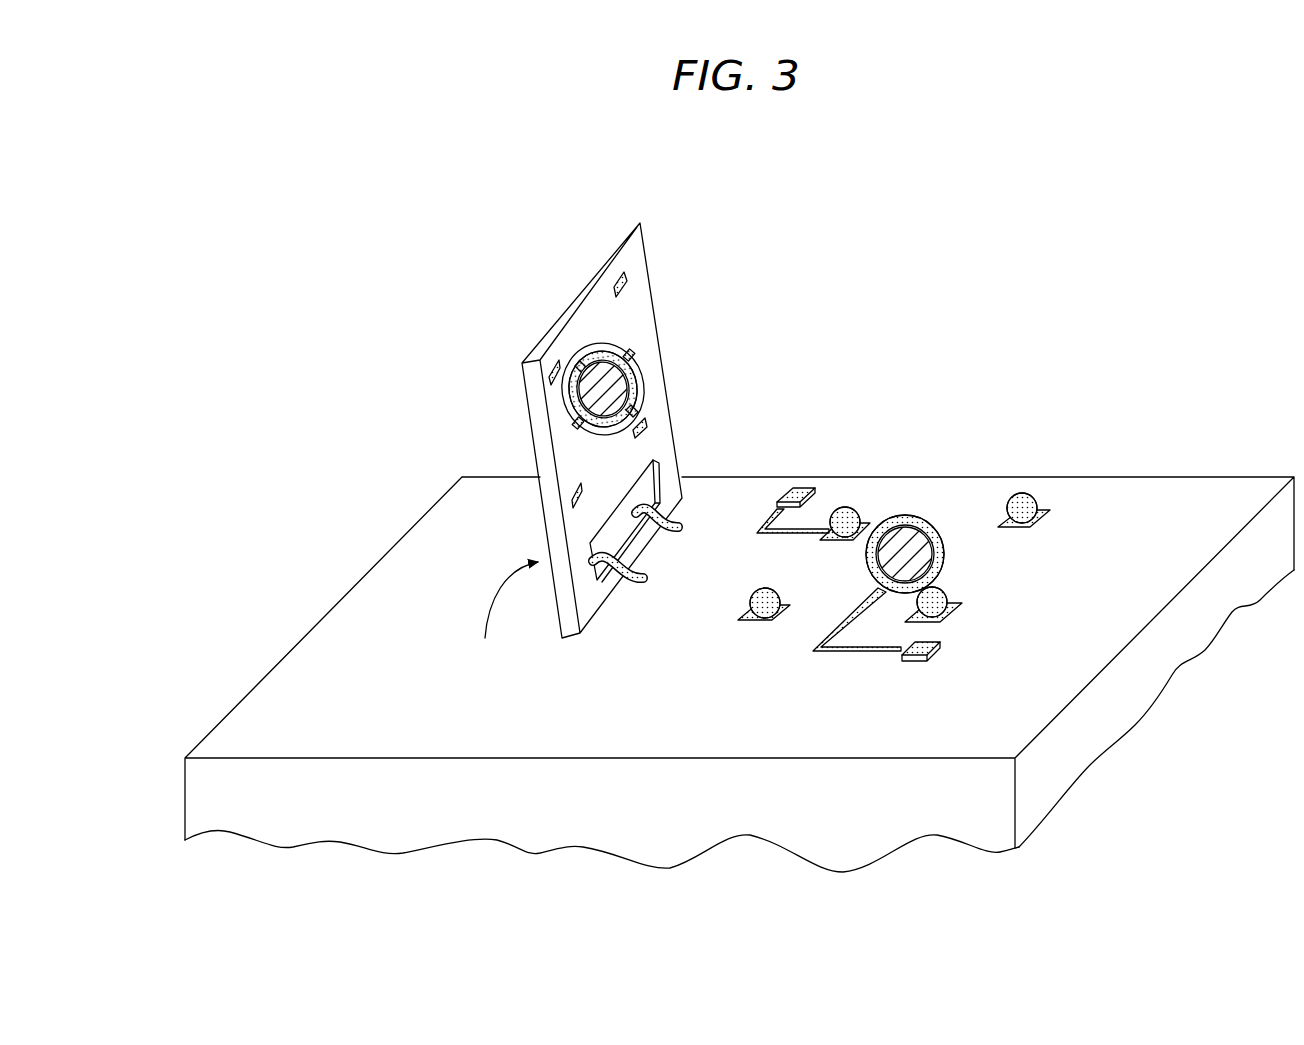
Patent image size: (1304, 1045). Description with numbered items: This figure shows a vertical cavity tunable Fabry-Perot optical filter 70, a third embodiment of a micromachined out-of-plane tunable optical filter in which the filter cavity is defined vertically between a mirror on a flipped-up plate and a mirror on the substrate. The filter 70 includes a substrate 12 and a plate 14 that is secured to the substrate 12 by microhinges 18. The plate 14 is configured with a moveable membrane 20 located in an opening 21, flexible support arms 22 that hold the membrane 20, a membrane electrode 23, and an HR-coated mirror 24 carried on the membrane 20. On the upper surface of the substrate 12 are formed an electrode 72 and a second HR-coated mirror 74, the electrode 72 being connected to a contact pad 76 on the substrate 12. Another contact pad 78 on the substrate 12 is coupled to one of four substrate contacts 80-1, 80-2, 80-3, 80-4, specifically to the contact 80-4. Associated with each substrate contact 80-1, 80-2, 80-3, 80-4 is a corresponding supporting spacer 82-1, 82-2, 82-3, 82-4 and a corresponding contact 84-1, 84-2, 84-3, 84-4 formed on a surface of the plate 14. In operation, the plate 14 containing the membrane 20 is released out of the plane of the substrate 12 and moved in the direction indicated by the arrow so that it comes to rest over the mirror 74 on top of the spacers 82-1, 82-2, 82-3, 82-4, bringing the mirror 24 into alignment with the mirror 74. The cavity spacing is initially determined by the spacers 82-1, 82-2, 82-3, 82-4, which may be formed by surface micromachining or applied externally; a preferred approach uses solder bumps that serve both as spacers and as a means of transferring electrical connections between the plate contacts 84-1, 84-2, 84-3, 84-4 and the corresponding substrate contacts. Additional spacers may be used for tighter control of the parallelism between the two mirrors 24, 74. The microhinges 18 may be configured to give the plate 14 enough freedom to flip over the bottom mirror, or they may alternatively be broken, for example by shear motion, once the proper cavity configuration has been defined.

The substrate 12 is at (892, 810).
The plate 14 is at (637, 297).
The microhinges 18 is at (679, 532).
The membrane 20 is at (594, 320).
The opening 21 is at (642, 378).
The flexible support arms 22 is at (628, 357).
The membrane electrode 23 is at (575, 407).
The HR-coated mirror 24 is at (600, 385).
The vertical cavity tunable FP optical filter 70 is at (442, 196).
The electrode 72 is at (924, 515).
The HR-coated mirror 74 is at (907, 560).
The contact pad 76 is at (935, 653).
The contact pad 78 is at (795, 490).
The contact 80-1 is at (1050, 517).
The contact 80-2 is at (955, 612).
The contact 80-3 is at (746, 615).
The contact 80-4 is at (838, 543).
The supporting spacer 82-1 is at (1023, 500).
The supporting spacer 82-2 is at (938, 600).
The supporting spacer 82-3 is at (763, 617).
The supporting spacer 82-4 is at (846, 510).
The contact 84-1 is at (618, 268).
The contact 84-2 is at (550, 378).
The contact 84-3 is at (572, 498).
The contact 84-4 is at (645, 427).